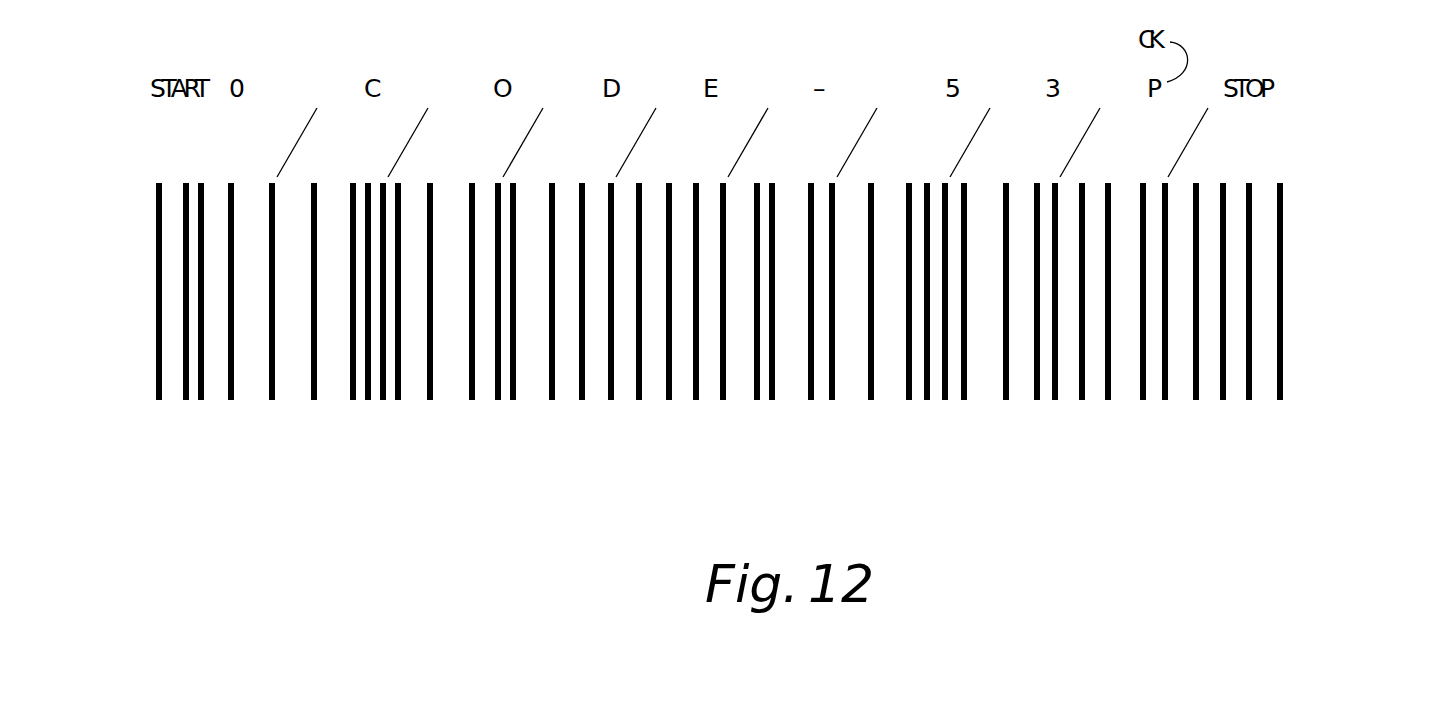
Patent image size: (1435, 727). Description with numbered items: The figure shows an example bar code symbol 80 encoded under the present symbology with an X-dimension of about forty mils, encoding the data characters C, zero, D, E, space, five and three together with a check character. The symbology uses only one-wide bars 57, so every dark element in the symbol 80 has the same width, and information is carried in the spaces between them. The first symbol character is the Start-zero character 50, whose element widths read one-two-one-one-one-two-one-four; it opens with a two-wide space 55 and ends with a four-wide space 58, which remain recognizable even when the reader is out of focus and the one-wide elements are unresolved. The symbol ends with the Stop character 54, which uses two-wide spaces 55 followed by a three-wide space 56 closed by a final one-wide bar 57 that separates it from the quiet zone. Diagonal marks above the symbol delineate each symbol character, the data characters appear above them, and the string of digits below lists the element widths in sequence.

The Start 0 character 50 is at (198, 158).
The Stop character 54 is at (1250, 167).
The two-wide space 55 is at (172, 232).
The three-wide space 56 is at (1262, 243).
The one-wide bar 57 is at (157, 315).
The four-wide space 58 is at (290, 391).
The symbol 80 is at (400, 470).